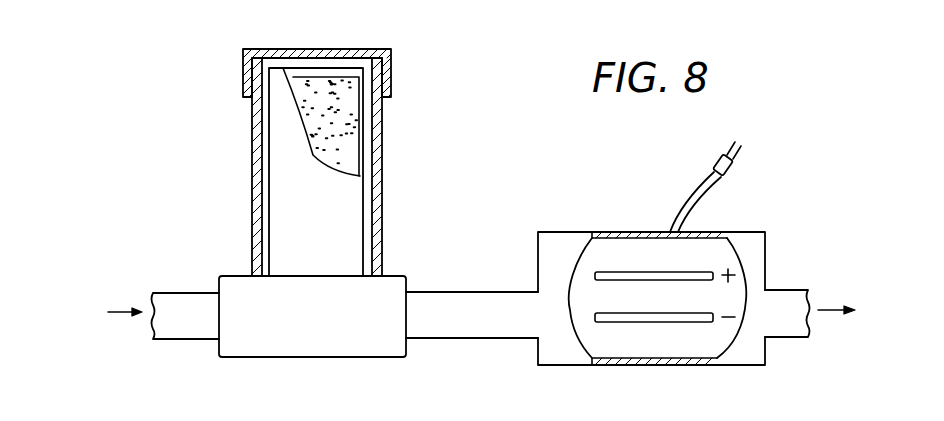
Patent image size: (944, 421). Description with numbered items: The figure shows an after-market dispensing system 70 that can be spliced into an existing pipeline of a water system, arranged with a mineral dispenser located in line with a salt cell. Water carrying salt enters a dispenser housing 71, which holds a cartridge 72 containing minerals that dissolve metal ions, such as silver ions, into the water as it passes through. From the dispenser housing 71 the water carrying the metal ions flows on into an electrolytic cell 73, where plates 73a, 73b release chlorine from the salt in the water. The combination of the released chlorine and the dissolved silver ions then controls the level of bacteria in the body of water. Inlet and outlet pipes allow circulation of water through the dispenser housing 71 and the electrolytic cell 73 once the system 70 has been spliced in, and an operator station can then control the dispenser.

The system 70 is at (482, 153).
The dispenser housing 71 is at (383, 203).
The salt cartridge 72 is at (333, 193).
The electrolytic cell 73 is at (617, 365).
The plate 73a is at (645, 270).
The plate 73b is at (665, 322).